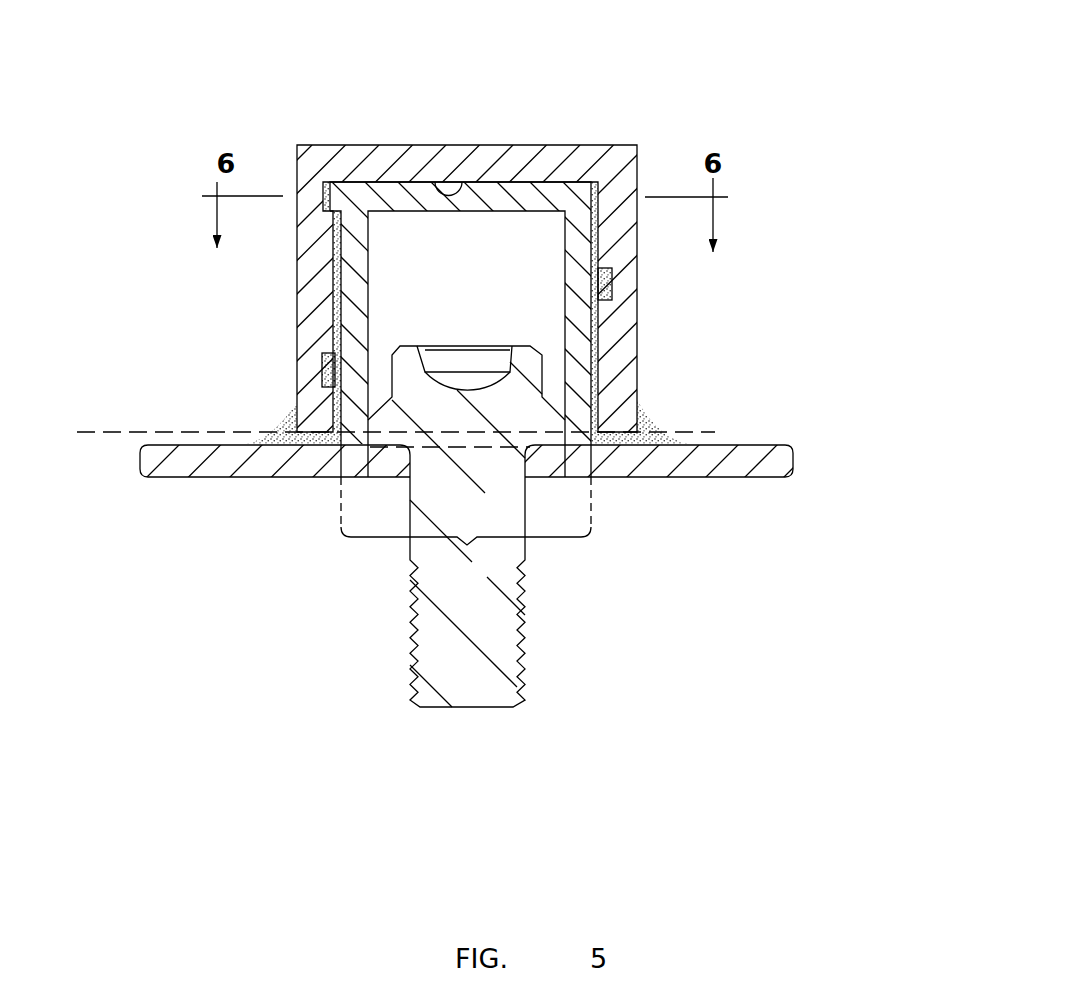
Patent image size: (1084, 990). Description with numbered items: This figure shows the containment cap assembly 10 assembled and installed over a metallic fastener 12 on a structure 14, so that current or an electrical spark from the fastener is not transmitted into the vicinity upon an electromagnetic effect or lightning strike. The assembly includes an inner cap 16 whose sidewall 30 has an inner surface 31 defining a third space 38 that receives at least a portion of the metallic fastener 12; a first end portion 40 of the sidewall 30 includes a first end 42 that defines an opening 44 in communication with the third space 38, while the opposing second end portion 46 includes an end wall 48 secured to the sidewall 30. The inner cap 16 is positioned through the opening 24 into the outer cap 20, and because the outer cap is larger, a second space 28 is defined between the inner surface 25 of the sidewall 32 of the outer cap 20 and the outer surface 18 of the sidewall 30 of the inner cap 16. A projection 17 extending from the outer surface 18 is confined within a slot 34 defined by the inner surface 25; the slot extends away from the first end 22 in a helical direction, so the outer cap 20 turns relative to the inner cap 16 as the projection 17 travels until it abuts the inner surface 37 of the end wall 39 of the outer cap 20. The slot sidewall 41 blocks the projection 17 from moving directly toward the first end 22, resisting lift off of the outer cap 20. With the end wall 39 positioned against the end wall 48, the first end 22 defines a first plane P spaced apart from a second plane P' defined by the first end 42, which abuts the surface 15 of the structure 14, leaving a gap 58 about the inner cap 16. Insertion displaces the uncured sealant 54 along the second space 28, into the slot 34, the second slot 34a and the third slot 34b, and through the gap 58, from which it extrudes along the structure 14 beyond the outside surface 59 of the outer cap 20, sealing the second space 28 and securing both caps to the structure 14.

The containment cap assembly 10 is at (618, 78).
The metallic fastener 12 is at (558, 627).
The structure 14 is at (745, 455).
The surface of structure 15 is at (163, 445).
The inner cap 16 is at (343, 455).
The projection 17 is at (340, 188).
The outer surface of inner cap 18 is at (347, 215).
The outer cap 20 is at (640, 172).
The first end of sidewall of outer cap 22 is at (318, 445).
The opening 24 is at (470, 545).
The inner surface of outer cap 25 is at (350, 404).
The second space 28 is at (328, 303).
The sidewall of inner cap 30 is at (355, 318).
The inner surface of inner cap sidewall 31 is at (371, 252).
The sidewall of outer cap 32 is at (300, 354).
The slot 34 is at (322, 180).
The second slot 34a is at (340, 360).
The third slot 34b is at (614, 283).
The inner surface of end wall 37 is at (465, 190).
The third space 38 is at (492, 274).
The end wall of outer cap 39 is at (448, 158).
The first end portion of sidewall 40 is at (322, 210).
The sidewall of slot 41 is at (318, 212).
The first end of inner cap 42 is at (348, 433).
The opening of inner cap 44 is at (470, 480).
The second end portion of sidewall 46 is at (592, 236).
The end wall of inner cap 48 is at (525, 195).
The uncured sealant 54 is at (599, 181).
The gap 58 is at (226, 447).
The outside surface of outer cap 59 is at (616, 322).
The first plane P is at (393, 413).
The second plane P' is at (450, 456).